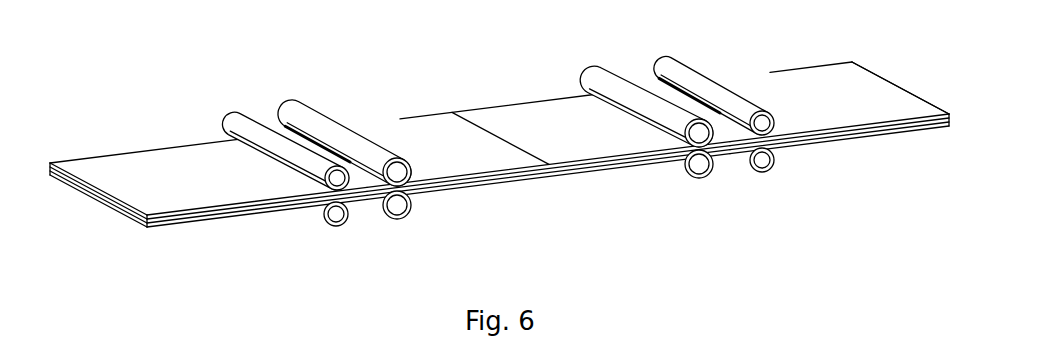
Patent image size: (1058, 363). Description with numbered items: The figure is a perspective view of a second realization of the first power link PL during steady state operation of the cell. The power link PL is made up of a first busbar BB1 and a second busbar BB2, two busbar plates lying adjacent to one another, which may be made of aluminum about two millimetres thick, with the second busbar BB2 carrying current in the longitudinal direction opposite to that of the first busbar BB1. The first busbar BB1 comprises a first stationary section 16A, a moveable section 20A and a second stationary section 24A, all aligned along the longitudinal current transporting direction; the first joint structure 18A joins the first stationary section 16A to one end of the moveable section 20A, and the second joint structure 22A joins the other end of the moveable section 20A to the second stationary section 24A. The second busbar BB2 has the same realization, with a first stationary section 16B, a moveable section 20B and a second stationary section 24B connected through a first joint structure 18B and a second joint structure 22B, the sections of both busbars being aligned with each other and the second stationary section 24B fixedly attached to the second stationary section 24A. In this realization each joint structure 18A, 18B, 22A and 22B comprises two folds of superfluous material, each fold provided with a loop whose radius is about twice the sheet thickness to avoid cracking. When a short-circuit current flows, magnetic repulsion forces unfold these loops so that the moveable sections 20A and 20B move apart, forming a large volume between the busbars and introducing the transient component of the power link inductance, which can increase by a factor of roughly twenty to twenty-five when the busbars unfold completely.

The first stationary section 16A is at (212, 185).
The first stationary section 16B is at (233, 217).
The first joint structure 18A is at (285, 128).
The first joint structure 18B is at (373, 213).
The moveable section 20A is at (462, 158).
The moveable section 20B is at (497, 178).
The second joint structure 22A is at (647, 82).
The second joint structure 22B is at (733, 160).
The second stationary section 24A is at (838, 108).
The second stationary section 24B is at (850, 132).
The first busbar BB1 is at (141, 146).
The second busbar BB2 is at (220, 220).
The power link PL is at (892, 84).